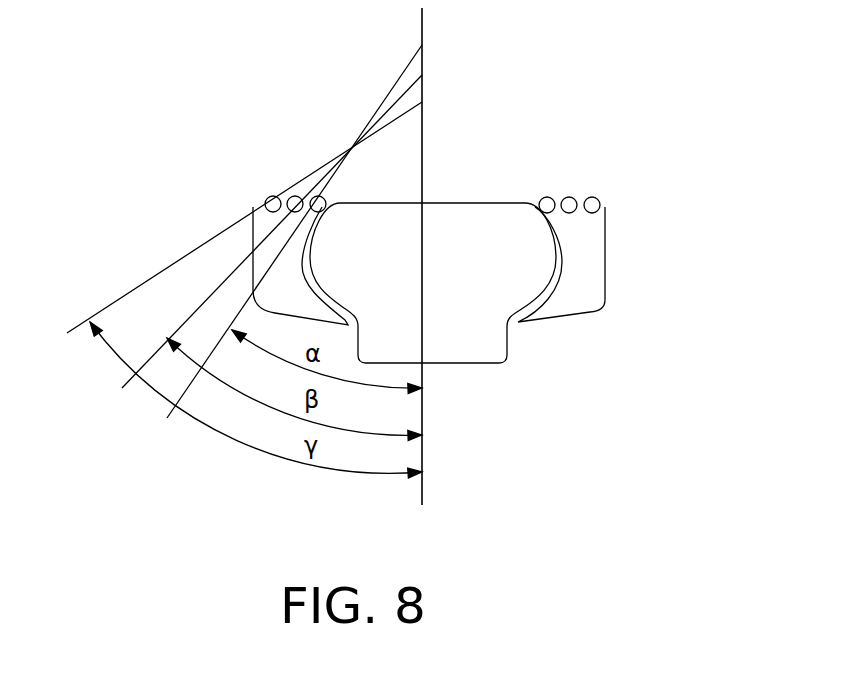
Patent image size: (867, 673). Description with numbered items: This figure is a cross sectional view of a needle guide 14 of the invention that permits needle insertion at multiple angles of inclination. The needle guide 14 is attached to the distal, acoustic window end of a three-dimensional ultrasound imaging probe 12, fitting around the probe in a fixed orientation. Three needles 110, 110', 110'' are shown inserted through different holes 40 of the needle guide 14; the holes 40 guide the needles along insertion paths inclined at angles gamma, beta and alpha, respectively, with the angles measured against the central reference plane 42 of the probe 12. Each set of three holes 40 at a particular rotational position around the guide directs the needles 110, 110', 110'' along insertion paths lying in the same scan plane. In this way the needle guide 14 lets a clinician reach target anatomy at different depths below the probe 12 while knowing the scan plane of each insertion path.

The 3D ultrasound imaging probe 12 is at (470, 348).
The needle guide 14 is at (600, 268).
The holes 40 is at (588, 197).
The central reference plane 42 is at (422, 22).
The needle 110 is at (239, 257).
The needle 110' is at (262, 271).
The needle 110'' is at (287, 272).